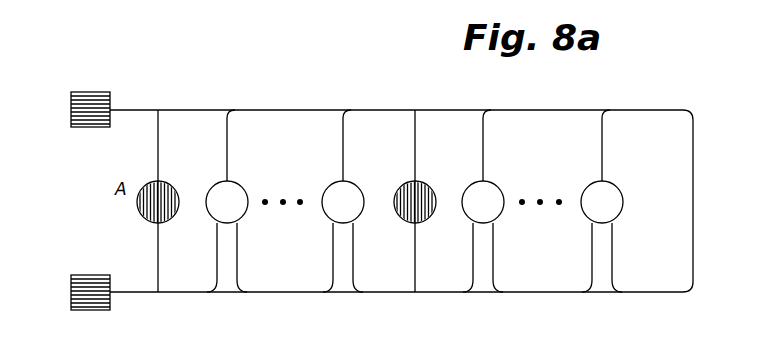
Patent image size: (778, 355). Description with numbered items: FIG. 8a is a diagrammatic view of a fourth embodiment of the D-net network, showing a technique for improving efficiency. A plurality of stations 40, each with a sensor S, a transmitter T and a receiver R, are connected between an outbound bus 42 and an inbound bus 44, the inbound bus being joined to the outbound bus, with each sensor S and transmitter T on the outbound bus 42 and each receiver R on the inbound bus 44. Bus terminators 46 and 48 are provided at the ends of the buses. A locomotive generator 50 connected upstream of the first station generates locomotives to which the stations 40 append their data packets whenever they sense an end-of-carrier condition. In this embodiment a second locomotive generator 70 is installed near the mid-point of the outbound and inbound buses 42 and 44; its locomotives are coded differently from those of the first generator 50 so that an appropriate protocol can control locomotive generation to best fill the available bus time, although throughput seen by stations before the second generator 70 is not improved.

The station 40 is at (243, 190).
The outbound bus 42 is at (291, 293).
The inbound bus 44 is at (295, 110).
The bus terminator 46 is at (97, 92).
The bus terminator 48 is at (88, 275).
The locomotive generator 50 is at (150, 222).
The second locomotive generator 70 is at (430, 187).